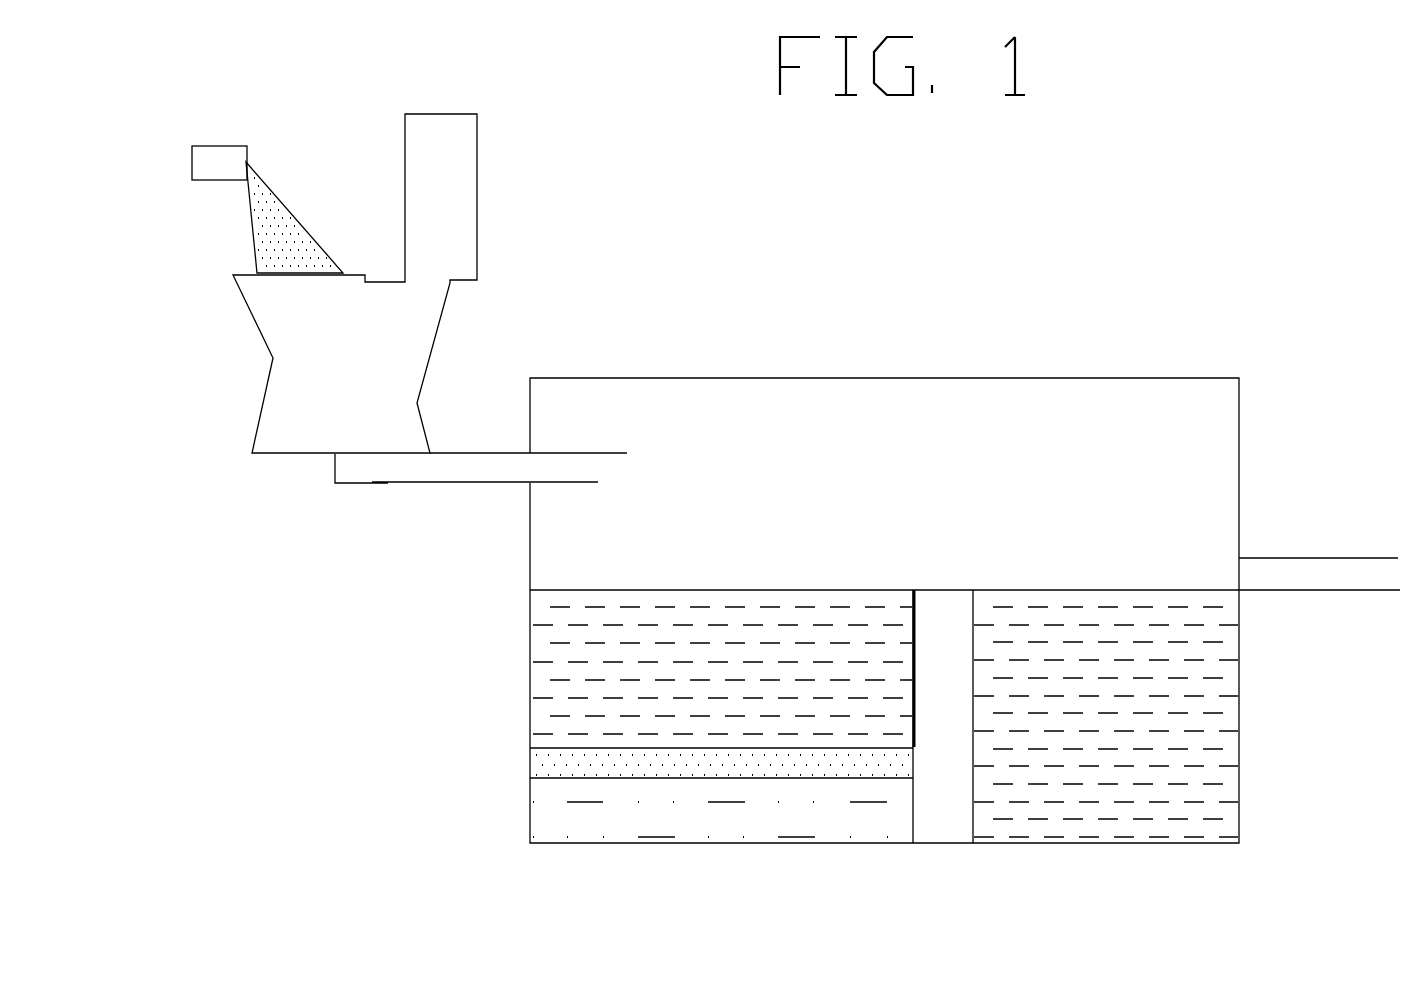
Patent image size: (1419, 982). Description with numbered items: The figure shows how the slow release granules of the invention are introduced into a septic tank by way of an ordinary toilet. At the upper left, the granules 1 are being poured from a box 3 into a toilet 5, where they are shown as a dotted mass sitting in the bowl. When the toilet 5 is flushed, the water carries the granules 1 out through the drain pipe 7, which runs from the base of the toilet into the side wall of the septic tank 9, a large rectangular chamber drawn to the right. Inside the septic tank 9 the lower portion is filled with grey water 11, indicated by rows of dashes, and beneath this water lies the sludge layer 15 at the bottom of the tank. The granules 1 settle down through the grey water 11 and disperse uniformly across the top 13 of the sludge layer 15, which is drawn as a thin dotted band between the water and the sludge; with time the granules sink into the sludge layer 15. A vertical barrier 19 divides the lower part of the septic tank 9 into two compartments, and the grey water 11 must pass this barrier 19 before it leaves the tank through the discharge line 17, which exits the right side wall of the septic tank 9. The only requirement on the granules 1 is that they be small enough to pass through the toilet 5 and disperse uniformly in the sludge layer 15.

The granules 1 is at (279, 220).
The box 3 is at (219, 158).
The toilet 5 is at (455, 170).
The drain pipe 7 is at (440, 468).
The septic tank 9 is at (853, 377).
The grey water 11 is at (568, 668).
The top of sludge layer 13 is at (553, 763).
The sludge layer 15 is at (597, 821).
The discharge line 17 is at (1342, 577).
The barrier 19 is at (947, 825).